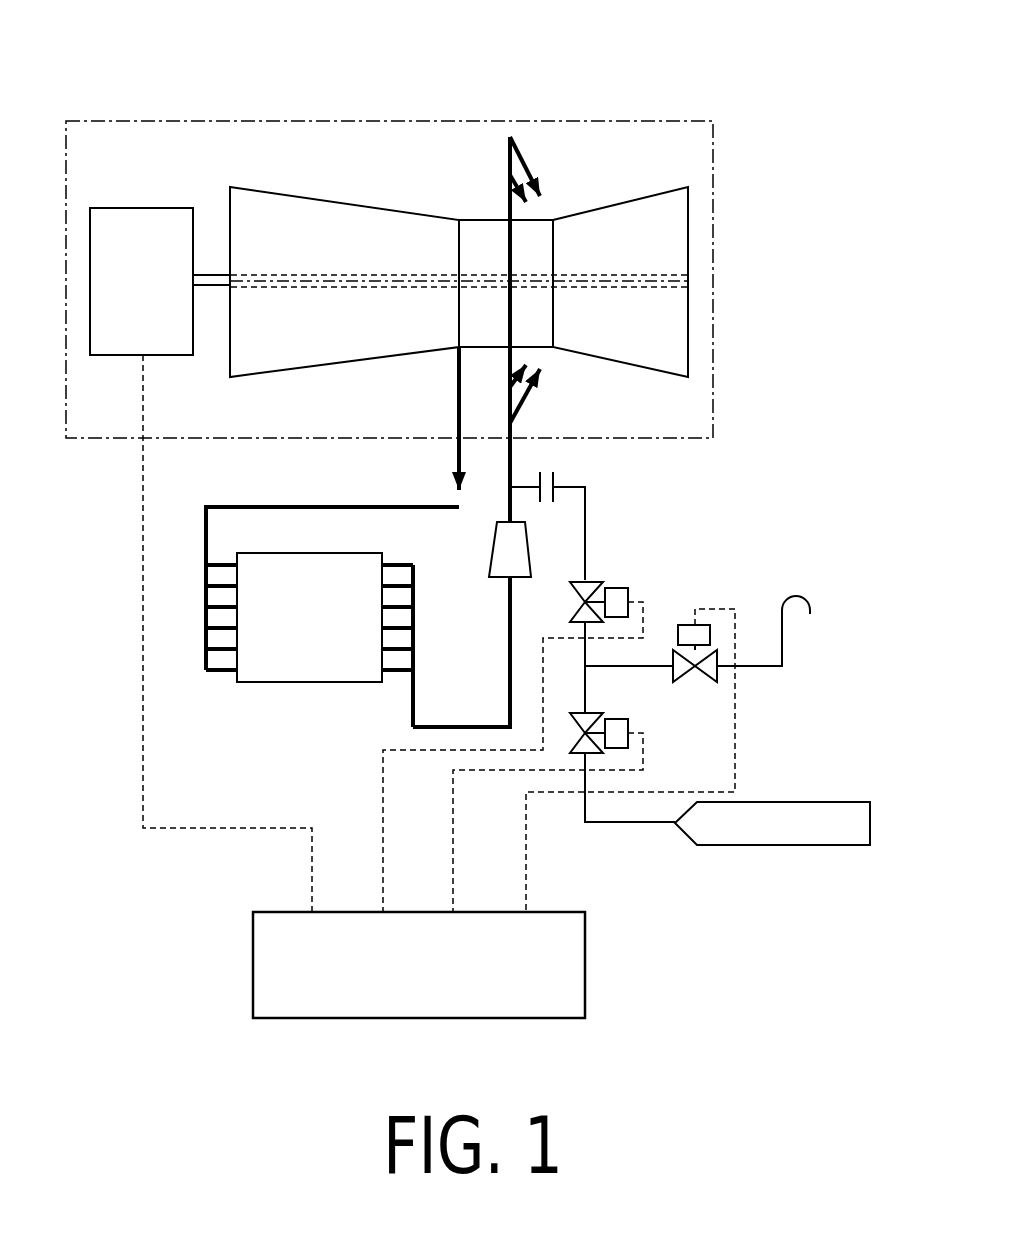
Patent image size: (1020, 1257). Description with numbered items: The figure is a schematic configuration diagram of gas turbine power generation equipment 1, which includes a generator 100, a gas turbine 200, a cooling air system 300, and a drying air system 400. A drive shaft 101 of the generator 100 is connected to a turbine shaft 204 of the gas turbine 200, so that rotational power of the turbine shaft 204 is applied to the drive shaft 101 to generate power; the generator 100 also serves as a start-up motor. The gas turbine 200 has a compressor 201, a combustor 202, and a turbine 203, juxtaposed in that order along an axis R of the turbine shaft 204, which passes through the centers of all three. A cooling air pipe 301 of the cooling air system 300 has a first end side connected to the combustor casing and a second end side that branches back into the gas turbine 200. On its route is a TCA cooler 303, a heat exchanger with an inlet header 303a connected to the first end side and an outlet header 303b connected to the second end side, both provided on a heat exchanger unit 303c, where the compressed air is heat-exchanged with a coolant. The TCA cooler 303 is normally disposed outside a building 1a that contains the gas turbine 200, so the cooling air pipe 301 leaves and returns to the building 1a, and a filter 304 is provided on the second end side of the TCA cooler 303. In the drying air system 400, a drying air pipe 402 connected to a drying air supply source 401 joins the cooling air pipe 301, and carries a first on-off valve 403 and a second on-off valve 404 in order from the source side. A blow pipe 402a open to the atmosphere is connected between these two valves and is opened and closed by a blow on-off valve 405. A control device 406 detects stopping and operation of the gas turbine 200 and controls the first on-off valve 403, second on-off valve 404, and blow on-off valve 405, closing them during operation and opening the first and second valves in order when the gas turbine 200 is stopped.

The gas turbine power generation equipment 1 is at (680, 66).
The building 1a is at (716, 152).
The generator 100 is at (141, 207).
The drive shaft 101 is at (208, 274).
The gas turbine 200 is at (497, 260).
The compressor 201 is at (290, 196).
The combustor 202 is at (485, 219).
The turbine 203 is at (630, 198).
The turbine shaft 204 is at (333, 272).
The axis R is at (655, 276).
The cooling air system 300 is at (314, 637).
The cooling air pipe 301 is at (285, 507).
The TCA cooler 303 is at (285, 553).
The inlet header 303a is at (205, 641).
The outlet header 303b is at (448, 582).
The heat exchanger unit 303c is at (340, 683).
The filter 304 is at (499, 578).
The drying air system 400 is at (626, 690).
The drying air supply source 401 is at (812, 800).
The drying air pipe 402 is at (587, 490).
The blow pipe 402a is at (772, 667).
The first on-off valve 403 is at (596, 712).
The second on-off valve 404 is at (592, 580).
The blow on-off valve 405 is at (700, 684).
The control device 406 is at (586, 962).